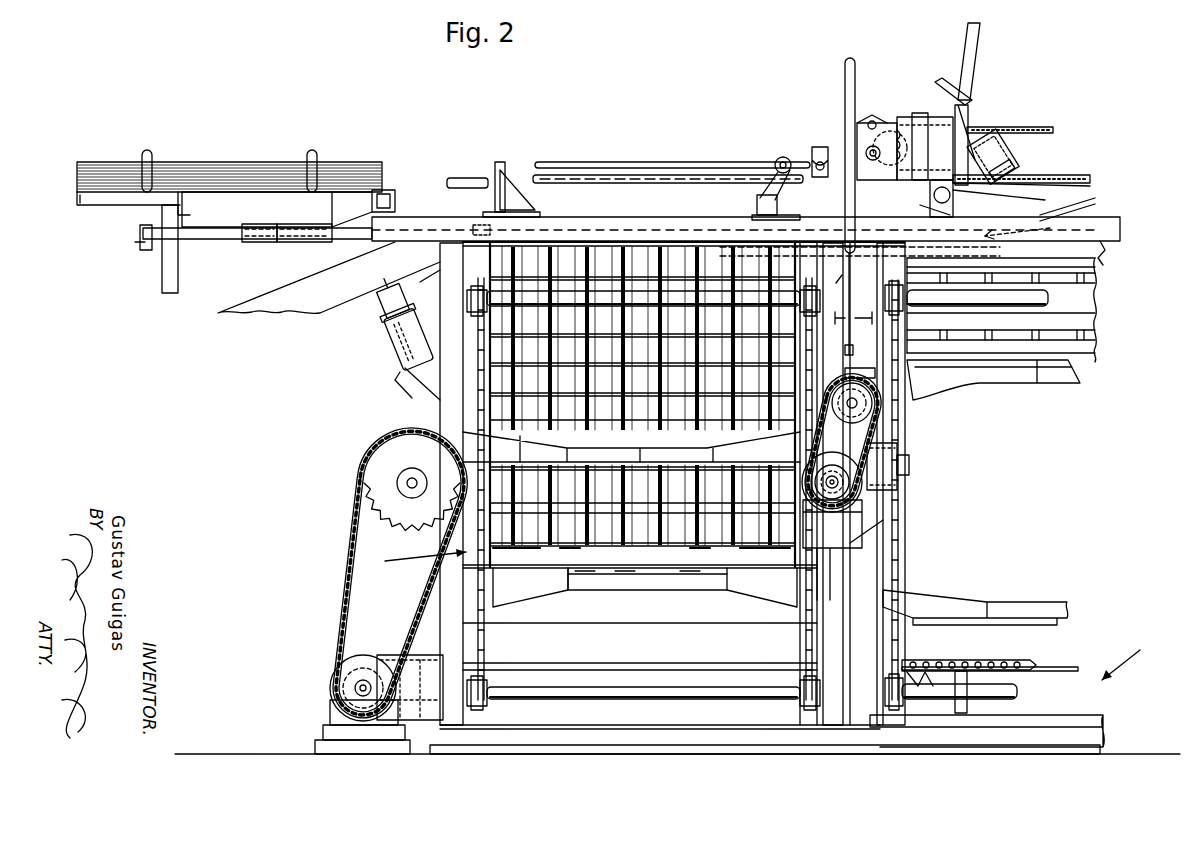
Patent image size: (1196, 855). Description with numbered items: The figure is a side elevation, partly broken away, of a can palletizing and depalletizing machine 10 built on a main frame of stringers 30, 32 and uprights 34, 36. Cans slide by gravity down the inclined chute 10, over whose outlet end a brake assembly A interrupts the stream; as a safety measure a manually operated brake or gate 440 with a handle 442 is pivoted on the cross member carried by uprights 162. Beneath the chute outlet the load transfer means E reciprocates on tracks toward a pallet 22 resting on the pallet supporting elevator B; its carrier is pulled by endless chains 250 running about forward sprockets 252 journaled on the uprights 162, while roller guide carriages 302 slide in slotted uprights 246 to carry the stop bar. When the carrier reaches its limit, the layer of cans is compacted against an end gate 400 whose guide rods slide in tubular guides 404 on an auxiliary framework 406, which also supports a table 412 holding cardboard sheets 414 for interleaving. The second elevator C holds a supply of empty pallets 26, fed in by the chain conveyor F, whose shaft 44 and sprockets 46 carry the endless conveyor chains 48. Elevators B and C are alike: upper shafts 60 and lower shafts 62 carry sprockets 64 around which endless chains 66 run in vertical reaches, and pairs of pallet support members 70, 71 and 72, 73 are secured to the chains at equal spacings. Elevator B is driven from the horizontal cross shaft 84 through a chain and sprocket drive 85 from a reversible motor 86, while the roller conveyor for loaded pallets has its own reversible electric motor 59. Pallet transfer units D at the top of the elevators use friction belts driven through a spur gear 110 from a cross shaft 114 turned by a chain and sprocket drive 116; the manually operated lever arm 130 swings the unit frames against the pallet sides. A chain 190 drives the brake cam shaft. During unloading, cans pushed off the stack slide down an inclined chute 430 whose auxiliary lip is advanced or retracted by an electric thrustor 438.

The inclined chute 10 is at (1095, 200).
The pallet 22 is at (687, 580).
The empty pallets 26 is at (1097, 292).
The stringer 30 is at (543, 746).
The stringer 32 is at (412, 218).
The upright 34 is at (445, 422).
The upright 36 is at (840, 600).
The shaft 44 is at (915, 676).
The sprockets 46 is at (950, 670).
The endless conveyor chains 48 is at (992, 663).
The reversible electric motor 59 is at (425, 656).
The upper shafts 60 is at (568, 297).
The lower shafts 62 is at (578, 695).
The sprockets 64 is at (479, 288).
The endless chains 66 is at (484, 410).
The pallet support member 70 is at (608, 455).
The pallet support member 71 is at (594, 578).
The pallet support member 72 is at (1020, 602).
The pallet support member 73 is at (1015, 380).
The horizontal cross shaft 84 is at (408, 482).
The chain and sprocket drive 85 is at (352, 556).
The reversible motor 86 is at (333, 680).
The spur gear 110 is at (840, 482).
The cross shaft 114 is at (898, 442).
The chain and sprocket drive 116 is at (860, 407).
The manually operated lever arm 130 is at (856, 86).
The uprights 162 is at (1002, 152).
The chain 190 is at (1018, 127).
The slotted uprights 246 is at (815, 152).
The endless chains 250 is at (1060, 176).
The forward sprockets 252 is at (957, 198).
The roller guide carriages 302 is at (830, 165).
The end gate 400 is at (492, 230).
The tubular guides 404 is at (303, 240).
The auxiliary framework 406 is at (178, 276).
The table 412 is at (237, 193).
The cardboard sheets 414 is at (196, 170).
The inclined chute 430 is at (297, 305).
The electric thrustor 438 is at (392, 332).
The manually operated brake or gate 440 is at (1010, 167).
The handle 442 is at (975, 52).
The brake assembly A is at (882, 113).
The pallet supporting elevator B is at (416, 559).
The second elevator C is at (1018, 470).
The pallet transfer unit D is at (835, 289).
The load transfer means E is at (1017, 226).
The chain conveyor F is at (1125, 654).